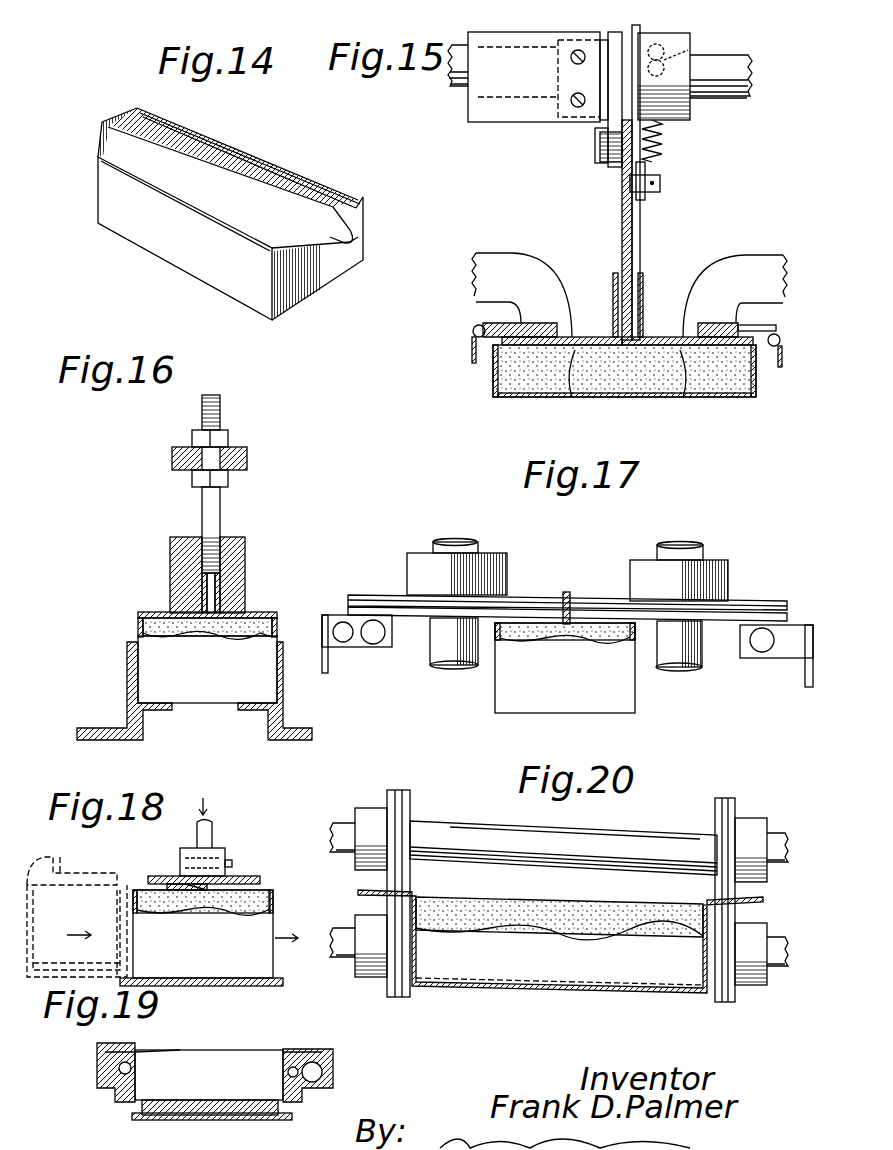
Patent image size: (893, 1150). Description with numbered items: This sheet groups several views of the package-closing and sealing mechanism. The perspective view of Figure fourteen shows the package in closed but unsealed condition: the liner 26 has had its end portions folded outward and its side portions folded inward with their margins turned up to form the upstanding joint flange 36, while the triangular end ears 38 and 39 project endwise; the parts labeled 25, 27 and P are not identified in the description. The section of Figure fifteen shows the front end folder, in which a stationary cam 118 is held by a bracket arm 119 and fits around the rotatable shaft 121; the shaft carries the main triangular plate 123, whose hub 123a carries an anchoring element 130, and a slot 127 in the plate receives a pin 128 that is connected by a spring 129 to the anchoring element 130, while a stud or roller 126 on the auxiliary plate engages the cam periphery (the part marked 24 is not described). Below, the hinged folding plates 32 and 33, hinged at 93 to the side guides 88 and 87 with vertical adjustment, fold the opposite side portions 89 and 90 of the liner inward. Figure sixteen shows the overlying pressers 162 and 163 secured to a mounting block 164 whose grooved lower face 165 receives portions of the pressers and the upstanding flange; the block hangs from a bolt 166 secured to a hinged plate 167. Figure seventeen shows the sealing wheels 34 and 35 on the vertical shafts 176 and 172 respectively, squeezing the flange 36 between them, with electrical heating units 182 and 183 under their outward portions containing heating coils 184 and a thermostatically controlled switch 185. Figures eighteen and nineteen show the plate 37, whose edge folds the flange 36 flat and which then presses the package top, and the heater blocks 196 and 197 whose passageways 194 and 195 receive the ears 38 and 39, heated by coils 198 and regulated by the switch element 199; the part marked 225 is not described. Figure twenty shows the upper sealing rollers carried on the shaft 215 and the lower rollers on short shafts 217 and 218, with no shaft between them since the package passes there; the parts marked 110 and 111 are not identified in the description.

In FIG. 14, the base block 25 is at (215, 289).
In FIG. 16, the base block 25 is at (200, 703).
In FIG. 17, the base block 25 is at (635, 700).
In FIG. 14, the liner 26 is at (277, 164).
In FIG. 16, the liner 26 is at (266, 634).
In FIG. 17, the liner 26 is at (611, 643).
In FIG. 16, the insulating filling 27 is at (150, 634).
In FIG. 18, the insulating filling 27 is at (225, 915).
In FIG. 20, the insulating filling 27 is at (595, 910).
In FIG. 14, the joint flange 36 is at (130, 108).
In FIG. 15, the joint flange 36 is at (643, 278).
In FIG. 17, the joint flange 36 is at (570, 594).
In FIG. 14, the end ear 38 is at (105, 132).
In FIG. 19, the end ear 38 is at (140, 1049).
In FIG. 20, the end ear 38 is at (362, 891).
In FIG. 14, the end ear 39 is at (353, 219).
In FIG. 19, the end ear 39 is at (283, 1052).
In FIG. 20, the end ear 39 is at (765, 899).
In FIG. 14, the product P is at (141, 260).
In FIG. 16, the product P is at (207, 669).
In FIG. 17, the product P is at (490, 702).
In FIG. 18, the product P is at (138, 890).
In FIG. 19, the product P is at (222, 1050).
In FIG. 20, the product P is at (622, 982).
In FIG. 15, the bracket arm 119 is at (511, 43).
In FIG. 15, the stationary cam 118 is at (620, 30).
In FIG. 15, the hub 123a is at (676, 33).
In FIG. 15, the anchoring element 130 is at (692, 54).
In FIG. 15, the shaft 121 is at (727, 100).
In FIG. 15, the slot 127 is at (641, 237).
In FIG. 15, the hatched bar 24 is at (621, 242).
In FIG. 15, the main plate 123 is at (636, 125).
In FIG. 15, the spring 129 is at (657, 160).
In FIG. 15, the stud or roller 126 is at (607, 167).
In FIG. 15, the pin 128 is at (643, 207).
In FIG. 15, the side folder plate 32 is at (593, 337).
In FIG. 15, the side folder plate 33 is at (663, 337).
In FIG. 15, the hinged connection 93 is at (473, 323).
In FIG. 15, the side portion of liner 89 is at (577, 372).
In FIG. 15, the side portion of liner 90 is at (688, 357).
In FIG. 16, the plate 167 is at (247, 460).
In FIG. 16, the bolt 166 is at (220, 500).
In FIG. 16, the mounting block 164 is at (245, 537).
In FIG. 16, the groove 165 is at (217, 578).
In FIG. 16, the presser 162 is at (157, 612).
In FIG. 16, the presser 163 is at (250, 612).
In FIG. 16, the side guide 88 is at (127, 689).
In FIG. 16, the side guide 87 is at (279, 691).
In FIG. 17, the shaft 172 is at (445, 542).
In FIG. 17, the shaft 176 is at (665, 545).
In FIG. 17, the sealing wheel 34 is at (517, 595).
In FIG. 17, the sealing wheel 35 is at (749, 607).
In FIG. 17, the electrical heating unit 182 is at (352, 650).
In FIG. 17, the electrical heating unit 183 is at (783, 658).
In FIG. 17, the electrical heating coil 184 is at (378, 648).
In FIG. 17, the thermostatically controlled switch 185 is at (338, 620).
In FIG. 18, the plate 37 is at (246, 877).
In FIG. 18, the bottom plate 225 is at (225, 987).
In FIG. 19, the bottom plate 225 is at (210, 1120).
In FIG. 19, the passageway 194 is at (132, 1045).
In FIG. 19, the passageway 195 is at (298, 1049).
In FIG. 19, the heater block 196 is at (97, 1064).
In FIG. 19, the heater block 197 is at (333, 1076).
In FIG. 19, the electrical coil 198 is at (97, 1079).
In FIG. 19, the thermostatically controlled switch element 199 is at (333, 1063).
In FIG. 20, the shaft 215 is at (500, 832).
In FIG. 20, the upright 110 is at (410, 800).
In FIG. 20, the upright foot 111 is at (387, 993).
In FIG. 20, the short shaft 217 is at (355, 927).
In FIG. 20, the short shaft 218 is at (768, 942).